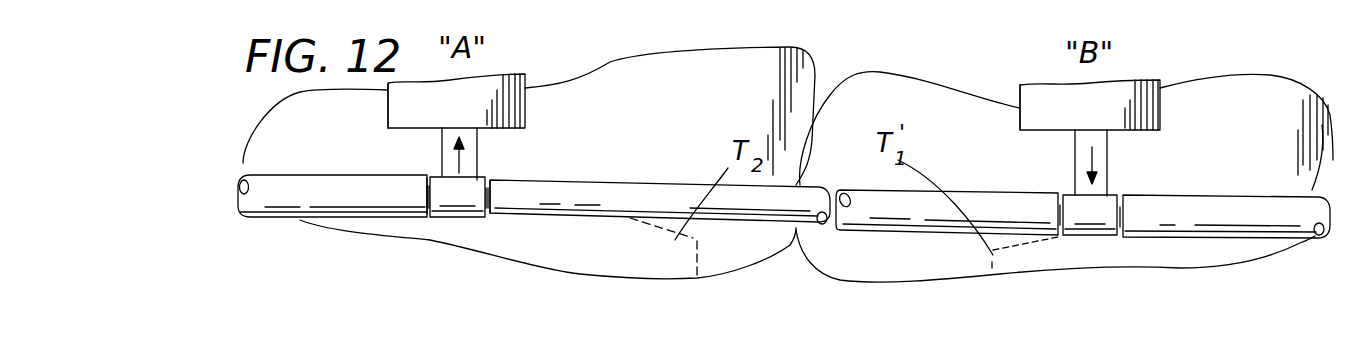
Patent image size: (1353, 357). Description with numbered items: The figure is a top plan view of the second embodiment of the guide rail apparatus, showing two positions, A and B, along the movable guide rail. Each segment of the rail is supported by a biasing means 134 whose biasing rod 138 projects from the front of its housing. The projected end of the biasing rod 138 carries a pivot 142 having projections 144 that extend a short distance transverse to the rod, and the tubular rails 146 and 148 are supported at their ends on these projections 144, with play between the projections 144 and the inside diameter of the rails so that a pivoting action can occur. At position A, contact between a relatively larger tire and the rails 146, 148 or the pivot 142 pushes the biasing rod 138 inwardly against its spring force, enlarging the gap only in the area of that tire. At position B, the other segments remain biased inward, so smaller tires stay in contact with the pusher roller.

The biasing means 134 is at (550, 101).
The biasing rod 138 is at (524, 133).
The pivot 142 is at (465, 215).
The projections 144 is at (432, 178).
The tubular rail 146 is at (330, 190).
The tubular rail 148 is at (655, 188).